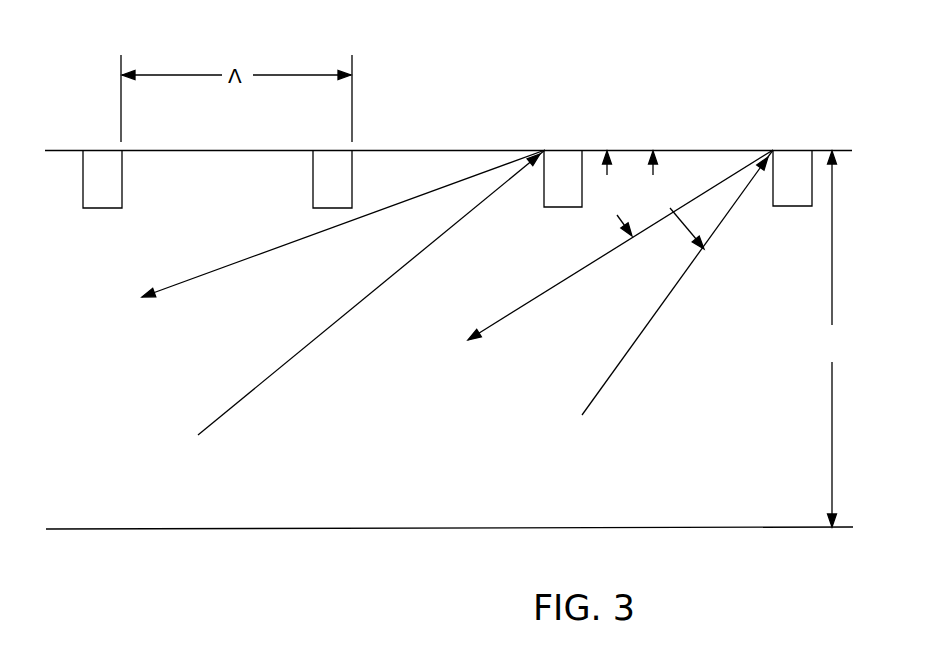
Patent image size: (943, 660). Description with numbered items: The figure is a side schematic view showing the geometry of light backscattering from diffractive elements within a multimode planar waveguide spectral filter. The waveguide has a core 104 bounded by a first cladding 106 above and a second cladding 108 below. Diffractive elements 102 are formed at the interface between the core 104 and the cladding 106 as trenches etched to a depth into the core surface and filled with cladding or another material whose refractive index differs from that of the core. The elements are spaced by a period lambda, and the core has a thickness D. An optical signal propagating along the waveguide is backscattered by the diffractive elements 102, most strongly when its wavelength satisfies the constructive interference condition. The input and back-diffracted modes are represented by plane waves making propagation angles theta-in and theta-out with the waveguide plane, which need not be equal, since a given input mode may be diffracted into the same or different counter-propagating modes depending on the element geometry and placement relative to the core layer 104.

The diffractive elements 102 is at (792, 170).
The core 104 is at (759, 469).
The first cladding 106 is at (489, 92).
The second cladding 108 is at (337, 603).